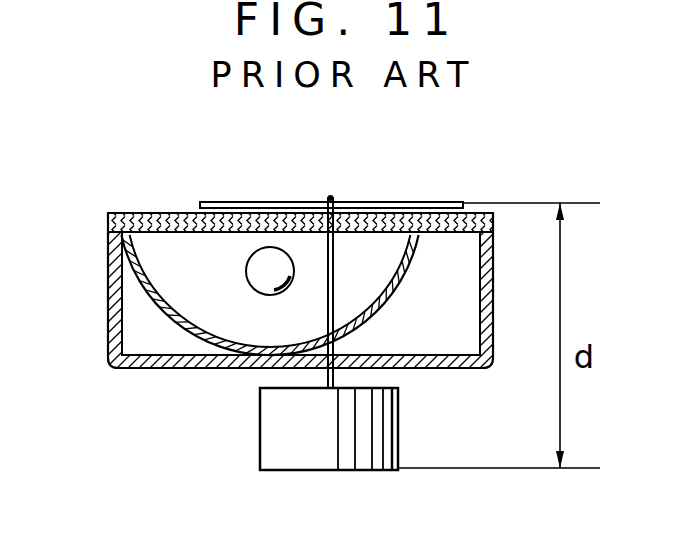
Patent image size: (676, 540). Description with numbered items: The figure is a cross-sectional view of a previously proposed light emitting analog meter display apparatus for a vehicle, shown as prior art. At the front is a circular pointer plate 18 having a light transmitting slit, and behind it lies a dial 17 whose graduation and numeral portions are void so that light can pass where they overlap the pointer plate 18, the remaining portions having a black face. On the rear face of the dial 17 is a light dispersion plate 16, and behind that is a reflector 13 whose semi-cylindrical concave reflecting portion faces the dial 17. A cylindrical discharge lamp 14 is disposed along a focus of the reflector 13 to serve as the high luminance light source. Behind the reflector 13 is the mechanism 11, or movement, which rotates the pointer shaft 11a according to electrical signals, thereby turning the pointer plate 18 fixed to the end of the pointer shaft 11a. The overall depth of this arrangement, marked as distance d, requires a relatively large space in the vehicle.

The mechanism 11 is at (260, 436).
The pointer shaft 11a is at (335, 288).
The reflector 13 is at (112, 253).
The cylindrical discharge lamp 14 is at (277, 262).
The light dispersion plate 16 is at (128, 224).
The dial 17 is at (167, 213).
The circular pointer plate 18 is at (230, 202).